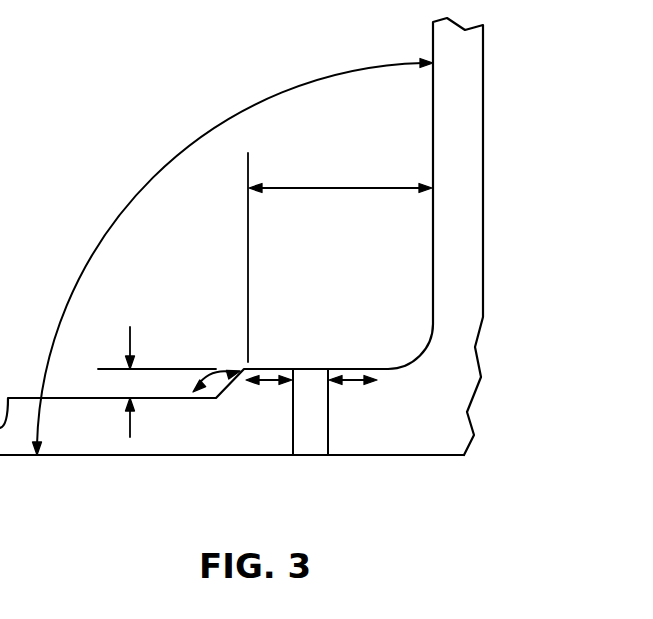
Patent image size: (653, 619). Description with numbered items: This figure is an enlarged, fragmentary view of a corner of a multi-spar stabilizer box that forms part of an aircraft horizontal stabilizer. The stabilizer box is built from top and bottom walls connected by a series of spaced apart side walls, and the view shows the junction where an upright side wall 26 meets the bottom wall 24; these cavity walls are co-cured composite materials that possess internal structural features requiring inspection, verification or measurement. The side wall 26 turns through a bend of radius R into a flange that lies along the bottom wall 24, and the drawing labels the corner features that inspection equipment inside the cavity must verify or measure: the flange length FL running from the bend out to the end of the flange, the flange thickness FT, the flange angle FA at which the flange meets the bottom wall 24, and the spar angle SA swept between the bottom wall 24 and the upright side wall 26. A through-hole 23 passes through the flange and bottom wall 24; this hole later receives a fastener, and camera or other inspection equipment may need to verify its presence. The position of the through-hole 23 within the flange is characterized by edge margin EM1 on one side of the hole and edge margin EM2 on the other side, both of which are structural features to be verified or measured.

The bottom wall 24 is at (102, 436).
The side wall 26 is at (462, 76).
The through-hole 23 is at (312, 440).
The spar angle SA is at (233, 257).
The flange length FL is at (340, 257).
The radius R is at (409, 340).
The flange thickness FT is at (154, 382).
The flange angle FA is at (202, 383).
The edge margin #1 EM1 is at (262, 392).
The edge margin #2 EM2 is at (360, 393).